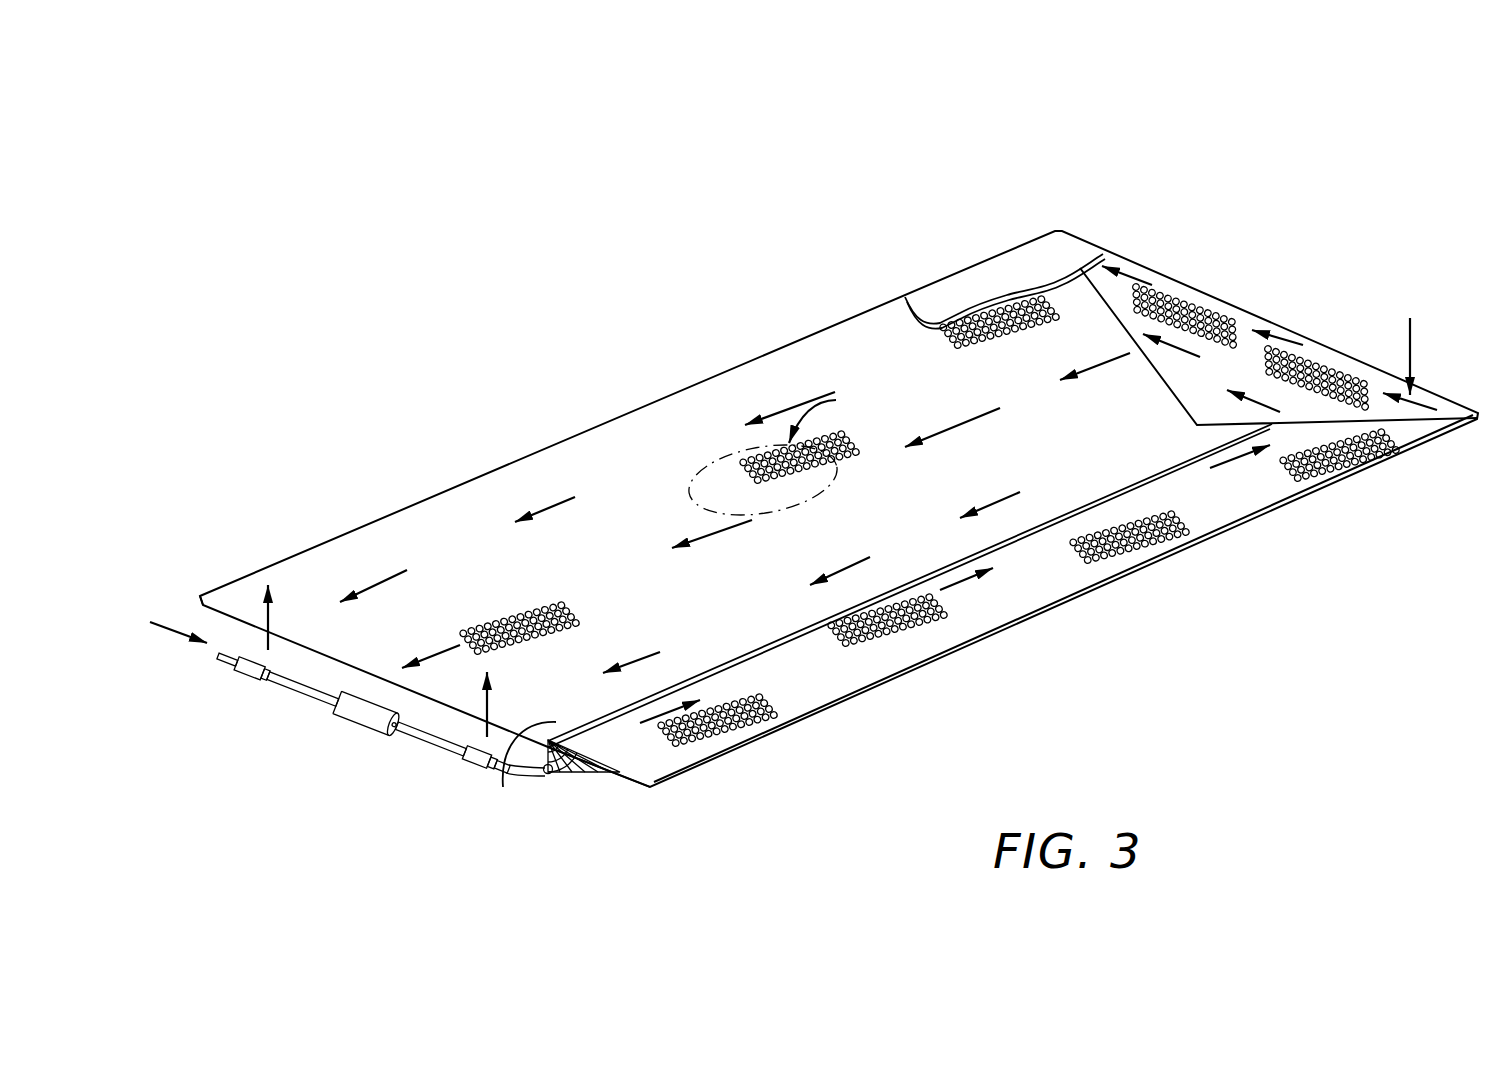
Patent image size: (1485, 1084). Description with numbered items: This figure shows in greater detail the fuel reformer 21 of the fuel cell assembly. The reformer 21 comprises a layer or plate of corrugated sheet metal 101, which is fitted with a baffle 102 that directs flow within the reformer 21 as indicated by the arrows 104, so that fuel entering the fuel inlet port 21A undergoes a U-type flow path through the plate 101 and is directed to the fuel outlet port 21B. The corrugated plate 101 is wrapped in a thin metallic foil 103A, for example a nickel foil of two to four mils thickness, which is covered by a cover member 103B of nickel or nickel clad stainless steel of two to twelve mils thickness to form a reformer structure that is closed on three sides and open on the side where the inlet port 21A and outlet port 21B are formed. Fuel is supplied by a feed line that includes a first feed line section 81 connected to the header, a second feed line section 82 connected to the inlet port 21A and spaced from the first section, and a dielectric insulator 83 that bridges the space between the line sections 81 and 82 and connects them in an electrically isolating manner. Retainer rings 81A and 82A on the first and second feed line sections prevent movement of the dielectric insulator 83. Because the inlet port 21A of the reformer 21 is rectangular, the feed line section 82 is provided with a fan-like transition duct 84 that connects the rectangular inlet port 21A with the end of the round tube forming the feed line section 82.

The fuel reformer 21 is at (852, 288).
The fuel inlet port 21A is at (619, 775).
The fuel outlet port 21B is at (219, 604).
The first feed line section 81 is at (293, 690).
The retainer ring 81A is at (248, 672).
The second feed line section 82 is at (423, 740).
The retainer ring 82A is at (473, 773).
The dielectric insulator 83 is at (360, 712).
The fan-like transition duct 84 is at (577, 774).
The corrugated sheet metal plate 101 is at (760, 717).
The baffle 102 is at (1028, 535).
The thin metallic foil 103A is at (503, 778).
The cover member 103B is at (1007, 262).
The arrows 104 is at (443, 650).